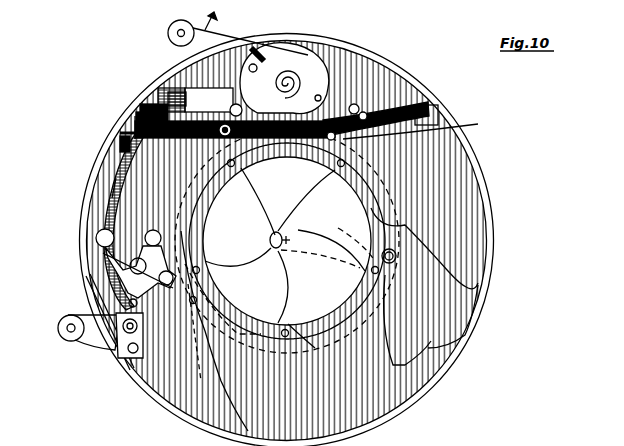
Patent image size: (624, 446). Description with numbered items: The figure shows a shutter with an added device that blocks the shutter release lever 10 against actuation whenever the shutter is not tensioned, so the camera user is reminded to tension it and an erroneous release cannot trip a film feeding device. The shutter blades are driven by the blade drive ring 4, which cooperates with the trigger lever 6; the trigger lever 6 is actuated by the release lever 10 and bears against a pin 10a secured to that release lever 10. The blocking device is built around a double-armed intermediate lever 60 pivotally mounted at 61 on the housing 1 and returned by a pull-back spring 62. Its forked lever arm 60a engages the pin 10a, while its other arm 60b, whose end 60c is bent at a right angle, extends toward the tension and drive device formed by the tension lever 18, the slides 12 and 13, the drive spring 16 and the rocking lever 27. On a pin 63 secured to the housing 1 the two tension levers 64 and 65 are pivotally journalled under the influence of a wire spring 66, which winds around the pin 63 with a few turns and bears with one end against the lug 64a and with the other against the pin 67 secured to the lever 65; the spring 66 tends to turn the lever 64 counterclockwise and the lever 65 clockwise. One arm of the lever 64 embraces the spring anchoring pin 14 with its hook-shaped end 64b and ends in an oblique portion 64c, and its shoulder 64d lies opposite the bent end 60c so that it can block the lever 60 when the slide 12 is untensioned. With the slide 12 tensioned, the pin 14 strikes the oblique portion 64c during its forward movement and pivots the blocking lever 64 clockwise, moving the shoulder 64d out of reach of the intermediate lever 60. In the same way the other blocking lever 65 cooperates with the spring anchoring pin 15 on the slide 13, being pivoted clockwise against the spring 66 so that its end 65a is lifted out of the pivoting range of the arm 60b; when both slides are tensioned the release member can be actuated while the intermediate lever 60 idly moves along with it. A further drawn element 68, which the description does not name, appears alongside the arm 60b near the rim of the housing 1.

The housing 1 is at (478, 190).
The blade drive ring 4 is at (215, 320).
The trigger lever 6 is at (165, 278).
The release lever 10 is at (63, 325).
The pin 10a is at (146, 336).
The slide 12 is at (200, 98).
The slide 13 is at (358, 108).
The spring anchoring pin 14 is at (130, 106).
The spring anchoring pin 15 is at (350, 100).
The drive spring 16 is at (338, 104).
The tension lever 18 is at (160, 22).
The rocking lever 27 is at (300, 78).
The intermediate lever 60 is at (100, 245).
The forked lever arm 60a is at (130, 296).
The lever arm 60b is at (110, 153).
The bent lever end 60c is at (114, 125).
The pivot 61 is at (90, 230).
The pull-back spring 62 is at (145, 225).
The pin 63 is at (240, 135).
The blocking lever 64 is at (282, 130).
The lug 64a is at (202, 146).
The hook-shaped end 64b is at (138, 98).
The oblique portion 64c is at (166, 86).
The shoulder 64d is at (130, 110).
The blocking lever 65 is at (368, 121).
The lever end 65a is at (113, 135).
The wire spring 66 is at (293, 125).
The pin 67 is at (335, 123).
The spring strip 68 is at (115, 172).